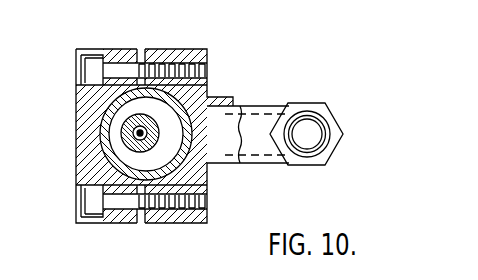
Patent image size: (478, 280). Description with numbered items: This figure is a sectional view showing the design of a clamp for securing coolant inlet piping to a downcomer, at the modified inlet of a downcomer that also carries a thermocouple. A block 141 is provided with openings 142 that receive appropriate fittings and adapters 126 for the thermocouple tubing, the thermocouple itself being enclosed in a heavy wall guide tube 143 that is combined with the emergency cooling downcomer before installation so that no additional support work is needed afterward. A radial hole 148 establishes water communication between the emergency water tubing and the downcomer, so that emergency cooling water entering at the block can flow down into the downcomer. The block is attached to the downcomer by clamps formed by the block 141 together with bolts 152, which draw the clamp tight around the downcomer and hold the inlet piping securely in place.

The adapters 126 is at (0, 19).
The block 141 is at (87, 110).
The openings 142 is at (98, 141).
The heavy wall guide tube 143 is at (147, 133).
The radial hole 148 is at (204, 116).
The bolts 152 is at (164, 56).